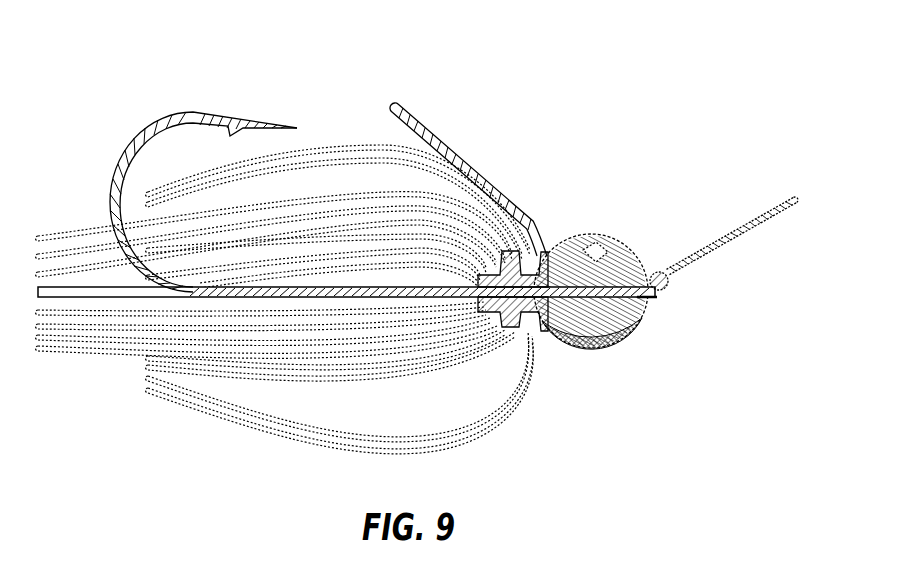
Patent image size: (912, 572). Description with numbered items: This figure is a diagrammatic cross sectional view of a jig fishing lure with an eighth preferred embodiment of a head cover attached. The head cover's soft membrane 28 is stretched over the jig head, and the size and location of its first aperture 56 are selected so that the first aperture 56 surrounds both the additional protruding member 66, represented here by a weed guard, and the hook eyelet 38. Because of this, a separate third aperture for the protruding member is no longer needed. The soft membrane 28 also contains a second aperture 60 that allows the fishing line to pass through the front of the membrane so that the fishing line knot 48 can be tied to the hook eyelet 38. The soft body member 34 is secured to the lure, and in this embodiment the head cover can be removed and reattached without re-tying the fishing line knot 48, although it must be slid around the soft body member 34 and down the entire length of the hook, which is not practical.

The soft membrane 28 is at (601, 348).
The soft body member 34 is at (534, 378).
The hook eyelet 38 is at (662, 293).
The fishing line knot 48 is at (665, 265).
The first aperture 56 is at (604, 242).
The second aperture 60 is at (539, 258).
The additional protruding member 66 is at (434, 130).